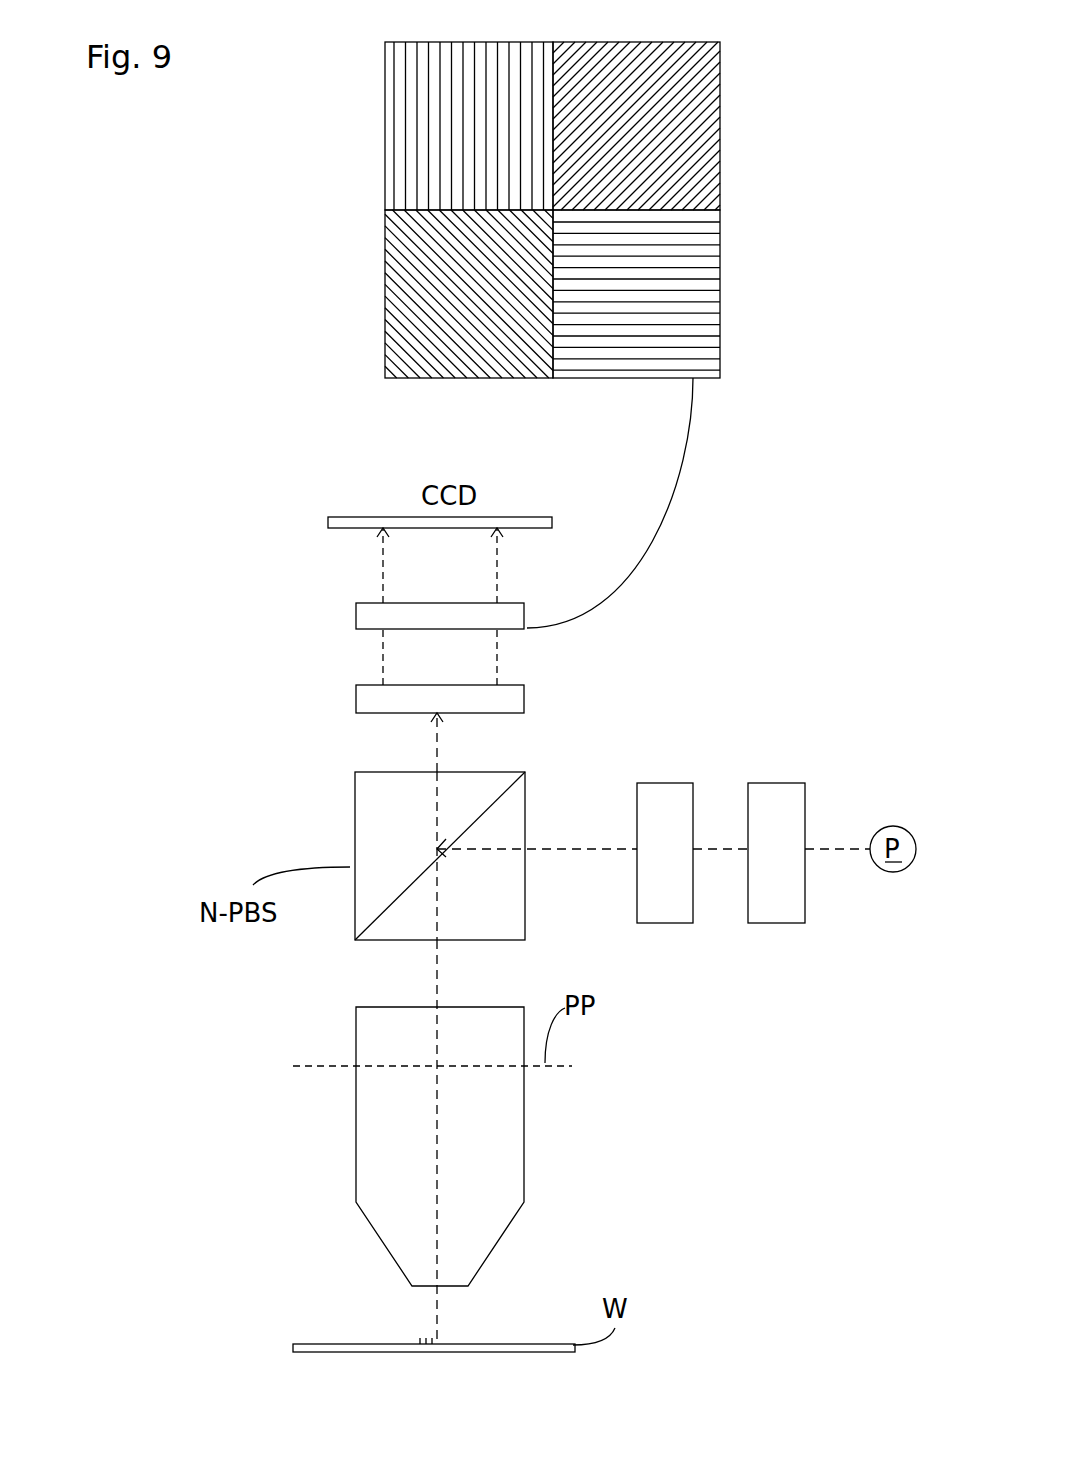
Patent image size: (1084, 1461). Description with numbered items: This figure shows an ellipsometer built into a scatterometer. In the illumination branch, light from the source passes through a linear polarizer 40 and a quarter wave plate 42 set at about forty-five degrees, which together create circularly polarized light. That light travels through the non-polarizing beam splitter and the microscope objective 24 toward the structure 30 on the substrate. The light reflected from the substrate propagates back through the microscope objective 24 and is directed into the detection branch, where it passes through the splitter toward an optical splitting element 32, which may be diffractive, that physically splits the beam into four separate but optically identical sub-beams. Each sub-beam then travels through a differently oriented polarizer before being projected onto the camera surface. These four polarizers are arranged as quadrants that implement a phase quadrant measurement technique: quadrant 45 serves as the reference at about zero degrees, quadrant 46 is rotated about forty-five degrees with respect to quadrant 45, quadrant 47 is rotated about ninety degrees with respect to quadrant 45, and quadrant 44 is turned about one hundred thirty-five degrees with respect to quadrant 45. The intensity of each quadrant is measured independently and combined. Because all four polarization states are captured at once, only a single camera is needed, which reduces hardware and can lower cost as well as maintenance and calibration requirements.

The quadrant 45 is at (385, 155).
The quadrant 46 is at (720, 125).
The quadrant 44 is at (385, 293).
The quadrant 47 is at (720, 317).
The optical splitting element 32 is at (452, 711).
The quarter wave plate 42 is at (677, 862).
The linear polarizer 40 is at (790, 836).
The microscope objective 24 is at (517, 1137).
The structure 30 is at (433, 1352).